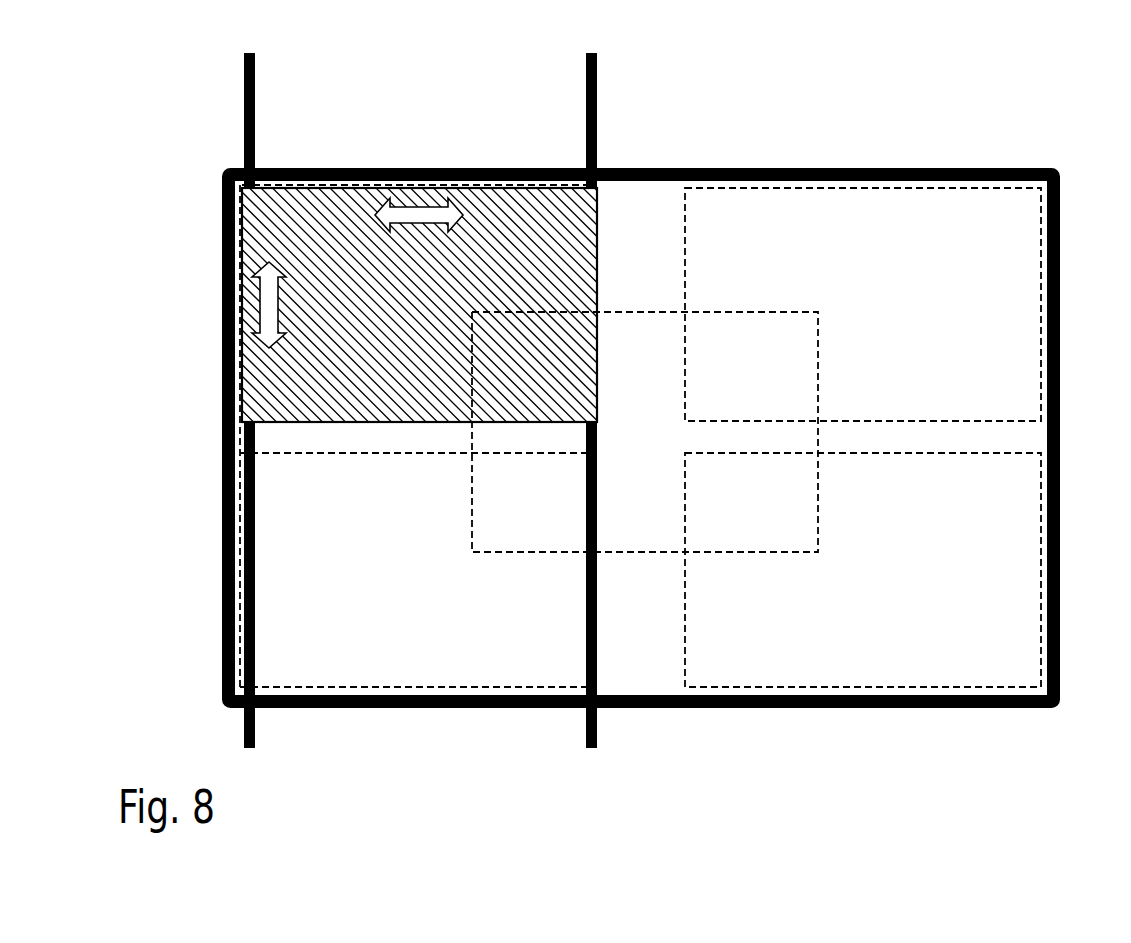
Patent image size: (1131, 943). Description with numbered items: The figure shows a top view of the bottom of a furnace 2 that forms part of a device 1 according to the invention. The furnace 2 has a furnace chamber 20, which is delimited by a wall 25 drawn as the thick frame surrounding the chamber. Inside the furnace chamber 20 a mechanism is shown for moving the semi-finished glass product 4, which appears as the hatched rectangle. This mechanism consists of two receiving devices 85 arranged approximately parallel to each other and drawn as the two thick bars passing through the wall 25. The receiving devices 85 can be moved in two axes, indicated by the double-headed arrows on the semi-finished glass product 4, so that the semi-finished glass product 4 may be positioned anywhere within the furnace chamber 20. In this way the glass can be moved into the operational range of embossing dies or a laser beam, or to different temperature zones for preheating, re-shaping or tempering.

The device 1 is at (1062, 71).
The furnace 2 is at (954, 141).
The semi-finished glass product 4 is at (531, 208).
The furnace chamber 20 is at (652, 656).
The wall 25 is at (1062, 245).
The receiving devices 85 is at (256, 100).